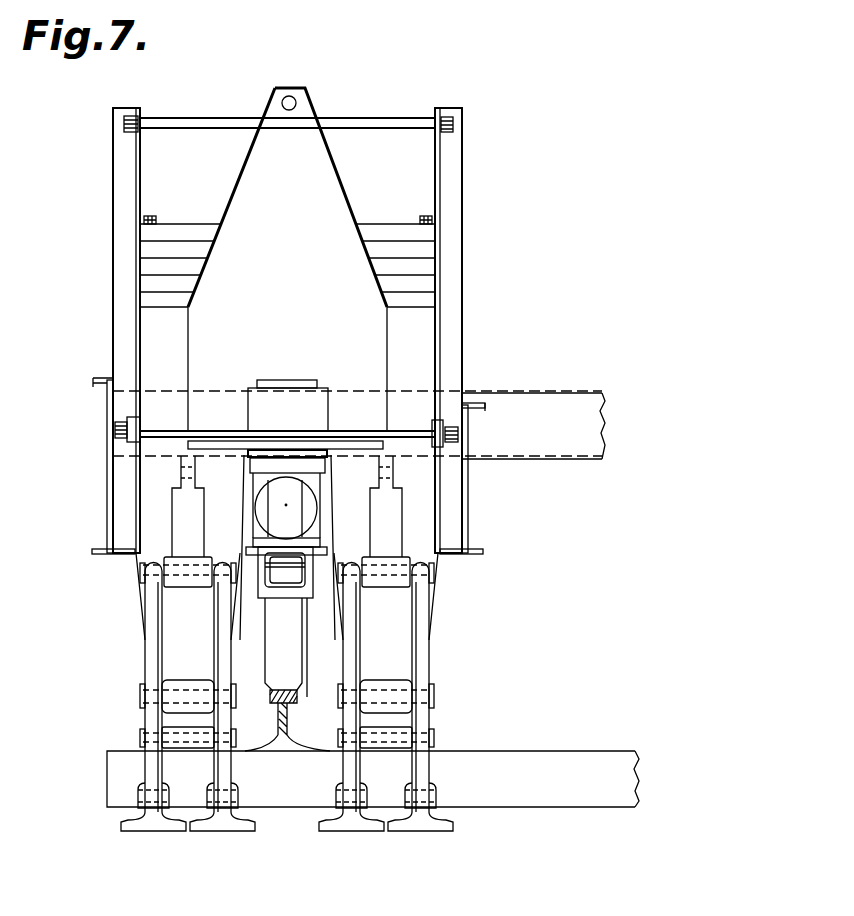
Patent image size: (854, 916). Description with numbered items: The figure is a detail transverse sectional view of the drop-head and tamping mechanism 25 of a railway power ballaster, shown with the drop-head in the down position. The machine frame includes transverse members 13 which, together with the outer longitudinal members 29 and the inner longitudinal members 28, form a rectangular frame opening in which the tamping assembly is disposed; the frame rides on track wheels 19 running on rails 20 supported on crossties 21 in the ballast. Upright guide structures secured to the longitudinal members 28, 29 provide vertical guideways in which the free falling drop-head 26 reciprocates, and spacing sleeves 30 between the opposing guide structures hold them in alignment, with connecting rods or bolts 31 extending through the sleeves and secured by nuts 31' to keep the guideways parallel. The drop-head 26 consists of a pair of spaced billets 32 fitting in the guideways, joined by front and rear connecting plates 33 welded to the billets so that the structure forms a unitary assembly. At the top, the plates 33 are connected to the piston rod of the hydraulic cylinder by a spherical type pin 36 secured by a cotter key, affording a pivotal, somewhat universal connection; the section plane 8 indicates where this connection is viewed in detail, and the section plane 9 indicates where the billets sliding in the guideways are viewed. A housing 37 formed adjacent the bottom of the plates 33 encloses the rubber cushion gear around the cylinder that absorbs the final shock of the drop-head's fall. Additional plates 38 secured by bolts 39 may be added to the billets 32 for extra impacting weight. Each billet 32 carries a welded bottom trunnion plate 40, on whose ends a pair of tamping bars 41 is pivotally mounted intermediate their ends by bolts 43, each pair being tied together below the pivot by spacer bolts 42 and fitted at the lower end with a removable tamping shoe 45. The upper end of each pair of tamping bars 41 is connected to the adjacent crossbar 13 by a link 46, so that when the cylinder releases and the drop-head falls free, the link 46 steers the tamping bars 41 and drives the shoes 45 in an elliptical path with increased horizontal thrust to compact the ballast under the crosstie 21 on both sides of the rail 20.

The section plane 8— 8 is at (289, 172).
The section plane 9— 9 is at (224, 417).
The transverse members 13 is at (574, 448).
The track wheels 19 is at (268, 652).
The rails 20 is at (297, 703).
The crossties 21 is at (575, 805).
The drop-head and tamping mechanism 25 is at (342, 104).
The drop-head 26 is at (437, 325).
The longitudinal members 28 is at (466, 488).
The longitudinal members 29 is at (107, 507).
The spacing sleeves 30 is at (207, 118).
The connecting rods or bolts 31 is at (282, 278).
The nuts 31' is at (297, 281).
The billets 32 is at (148, 345).
The connecting plates 33 is at (325, 190).
The spherical type pin 36 is at (296, 100).
The housing 37 is at (317, 392).
The additional plates 38 is at (178, 224).
The bolts 39 is at (150, 218).
The trunnion plate 40 is at (187, 686).
The tamping bars 41 is at (220, 622).
The spacer bolts 42 is at (195, 735).
The bolts 43 is at (140, 694).
The tamping shoe 45 is at (213, 822).
The link 46 is at (178, 525).